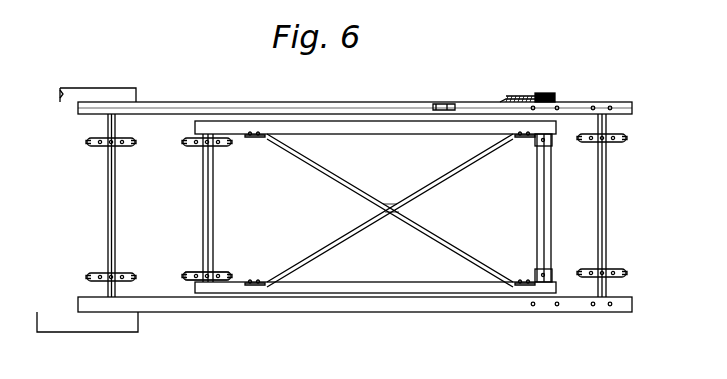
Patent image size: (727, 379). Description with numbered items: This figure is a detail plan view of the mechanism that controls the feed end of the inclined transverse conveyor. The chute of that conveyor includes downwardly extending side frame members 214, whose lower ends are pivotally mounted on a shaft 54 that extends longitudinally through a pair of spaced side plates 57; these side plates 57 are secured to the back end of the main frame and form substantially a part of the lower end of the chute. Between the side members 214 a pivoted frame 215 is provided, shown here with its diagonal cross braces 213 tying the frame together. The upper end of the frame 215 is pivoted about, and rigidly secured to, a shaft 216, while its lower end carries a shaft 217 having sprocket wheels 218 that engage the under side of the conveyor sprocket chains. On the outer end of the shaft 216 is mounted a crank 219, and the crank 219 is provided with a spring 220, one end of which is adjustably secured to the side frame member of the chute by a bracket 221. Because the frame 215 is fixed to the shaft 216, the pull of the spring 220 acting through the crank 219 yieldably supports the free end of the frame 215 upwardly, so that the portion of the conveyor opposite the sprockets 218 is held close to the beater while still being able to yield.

The shaft 54 is at (115, 210).
The side plates 57 is at (112, 90).
The cross brace 213 is at (390, 209).
The frame members 214 is at (402, 108).
The pivoted frame 215 is at (392, 132).
The shaft 216 is at (546, 206).
The shaft 217 is at (213, 203).
The sprocket wheels 218 is at (218, 274).
The crank 219 is at (556, 97).
The spring 220 is at (513, 97).
The bracket 221 is at (450, 104).